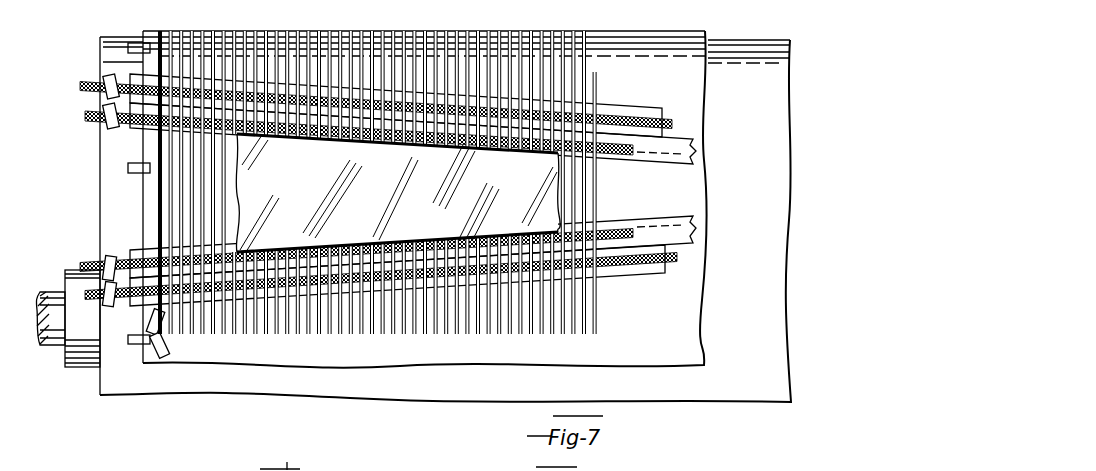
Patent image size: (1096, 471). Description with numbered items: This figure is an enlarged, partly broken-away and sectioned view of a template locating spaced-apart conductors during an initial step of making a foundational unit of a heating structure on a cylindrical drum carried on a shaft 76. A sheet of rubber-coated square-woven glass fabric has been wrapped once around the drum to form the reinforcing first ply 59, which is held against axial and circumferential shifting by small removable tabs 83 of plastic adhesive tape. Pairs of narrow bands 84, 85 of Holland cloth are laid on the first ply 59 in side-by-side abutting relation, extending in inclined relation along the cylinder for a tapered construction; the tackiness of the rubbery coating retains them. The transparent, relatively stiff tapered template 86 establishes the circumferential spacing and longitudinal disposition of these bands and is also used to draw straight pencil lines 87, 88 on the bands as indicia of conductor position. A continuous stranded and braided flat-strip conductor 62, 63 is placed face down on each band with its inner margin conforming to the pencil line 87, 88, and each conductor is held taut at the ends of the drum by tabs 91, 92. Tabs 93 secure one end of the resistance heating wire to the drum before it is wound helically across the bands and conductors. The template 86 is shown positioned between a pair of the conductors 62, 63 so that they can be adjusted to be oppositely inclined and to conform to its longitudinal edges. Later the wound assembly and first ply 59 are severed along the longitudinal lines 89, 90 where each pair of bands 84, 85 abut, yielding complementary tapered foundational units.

The reinforcing first ply 59 is at (685, 312).
The flexible conductor 62 is at (533, 152).
The flexible conductor 63 is at (437, 240).
The shaft 76 is at (56, 340).
The removable tabs 83 is at (127, 341).
The narrow band of Holland cloth 84 is at (678, 242).
The narrow band of Holland cloth 85 is at (657, 117).
The template 86 is at (533, 177).
The pencil line 87 is at (650, 216).
The pencil line 88 is at (680, 157).
The longitudinal line of abutment 89 is at (612, 237).
The longitudinal line of abutment 90 is at (623, 137).
The tab 91 is at (100, 287).
The tab 92 is at (102, 110).
The tabs 93 is at (166, 341).